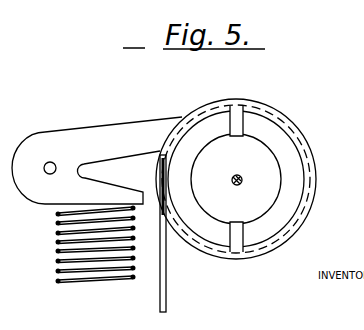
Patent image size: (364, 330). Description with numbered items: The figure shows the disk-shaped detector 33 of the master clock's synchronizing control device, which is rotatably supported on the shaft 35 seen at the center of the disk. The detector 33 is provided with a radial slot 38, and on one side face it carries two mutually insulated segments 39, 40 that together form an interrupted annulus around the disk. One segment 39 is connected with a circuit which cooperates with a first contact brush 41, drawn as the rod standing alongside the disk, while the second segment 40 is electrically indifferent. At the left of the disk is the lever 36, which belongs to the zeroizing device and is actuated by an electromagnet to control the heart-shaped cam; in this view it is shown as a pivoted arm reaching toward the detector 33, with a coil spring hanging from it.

The detector 33 is at (262, 156).
The shaft 35 is at (242, 181).
The lever 36 is at (86, 134).
The radial slot 38 is at (234, 116).
The segment 39 is at (216, 233).
The second segment 40 is at (265, 220).
The first contact brush 41 is at (161, 296).